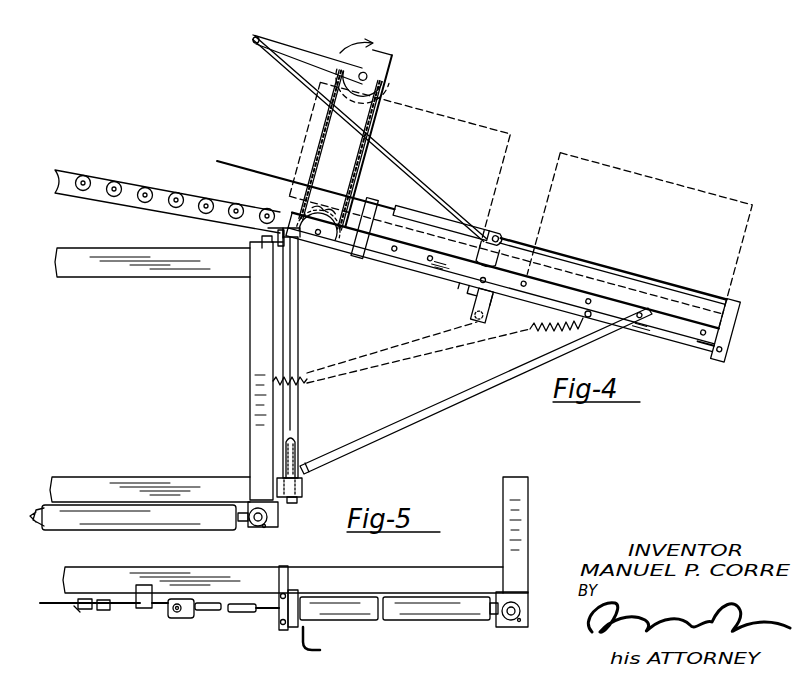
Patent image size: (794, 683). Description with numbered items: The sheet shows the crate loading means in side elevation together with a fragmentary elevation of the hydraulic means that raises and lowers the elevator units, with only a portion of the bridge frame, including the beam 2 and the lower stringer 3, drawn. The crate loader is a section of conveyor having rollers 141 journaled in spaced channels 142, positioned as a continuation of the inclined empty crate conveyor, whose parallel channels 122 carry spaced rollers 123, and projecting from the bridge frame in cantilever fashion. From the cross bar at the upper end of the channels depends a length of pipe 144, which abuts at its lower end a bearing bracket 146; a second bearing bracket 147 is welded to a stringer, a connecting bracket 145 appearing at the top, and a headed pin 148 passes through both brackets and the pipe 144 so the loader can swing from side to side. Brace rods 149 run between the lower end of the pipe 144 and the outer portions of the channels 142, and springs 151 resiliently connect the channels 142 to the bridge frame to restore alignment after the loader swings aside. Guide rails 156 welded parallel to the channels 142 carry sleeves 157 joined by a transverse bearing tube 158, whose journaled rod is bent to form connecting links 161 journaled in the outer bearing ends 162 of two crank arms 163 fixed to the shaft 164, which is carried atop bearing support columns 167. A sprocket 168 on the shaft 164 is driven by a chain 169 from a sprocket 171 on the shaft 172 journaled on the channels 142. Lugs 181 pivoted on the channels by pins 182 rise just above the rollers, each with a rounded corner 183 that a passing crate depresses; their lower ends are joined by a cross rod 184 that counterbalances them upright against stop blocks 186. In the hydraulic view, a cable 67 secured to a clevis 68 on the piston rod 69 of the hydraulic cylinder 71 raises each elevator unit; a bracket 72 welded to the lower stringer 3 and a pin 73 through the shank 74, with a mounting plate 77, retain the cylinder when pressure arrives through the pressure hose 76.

In FIG. 4, the frame beam 2 is at (80, 270).
In FIG. 4, the lower stringer 3 is at (70, 480).
In FIG. 5, the lower stringer 3 is at (319, 568).
In FIG. 5, the cable 67 is at (60, 606).
In FIG. 5, the clevis 68 is at (160, 610).
In FIG. 4, the piston rod 69 is at (40, 522).
In FIG. 5, the piston rod 69 is at (252, 614).
In FIG. 4, the hydraulic cylinder 71 is at (140, 520).
In FIG. 5, the hydraulic cylinder 71 is at (418, 617).
In FIG. 4, the bracket 72 is at (268, 511).
In FIG. 5, the bracket 72 is at (528, 603).
In FIG. 4, the pin 73 is at (257, 527).
In FIG. 5, the pin 73 is at (510, 622).
In FIG. 4, the shank 74 is at (264, 528).
In FIG. 5, the shank 74 is at (522, 620).
In FIG. 5, the pressure hose 76 is at (320, 644).
In FIG. 5, the mounting bracket 77 is at (281, 579).
In FIG. 4, the channels 122 is at (188, 212).
In FIG. 4, the rollers 123 is at (175, 193).
In FIG. 4, the rollers 141 is at (651, 316).
In FIG. 4, the channels 142 is at (445, 277).
In FIG. 4, the pipe 144 is at (298, 315).
In FIG. 4, the top bracket 145 is at (281, 243).
In FIG. 4, the bearing bracket 146 is at (303, 489).
In FIG. 4, the second bearing bracket 147 is at (255, 246).
In FIG. 4, the headed pin 148 is at (300, 447).
In FIG. 4, the brace rods 149 is at (470, 388).
In FIG. 4, the springs 151 is at (301, 377).
In FIG. 4, the guide rails 156 is at (575, 262).
In FIG. 4, the sleeves 157 is at (441, 229).
In FIG. 4, the bearing tube 158 is at (486, 254).
In FIG. 4, the connecting links 161 is at (428, 197).
In FIG. 4, the outer bearing ends 162 is at (254, 38).
In FIG. 4, the crank arms 163 is at (296, 54).
In FIG. 4, the shaft 164 is at (380, 73).
In FIG. 4, the bearing support columns 167 is at (366, 122).
In FIG. 4, the sprocket 168 is at (378, 60).
In FIG. 4, the chain 169 is at (384, 96).
In FIG. 4, the sprocket 171 is at (320, 222).
In FIG. 4, the shaft 172 is at (320, 248).
In FIG. 4, the lugs 181 is at (491, 303).
In FIG. 4, the pins 182 is at (487, 281).
In FIG. 4, the rounded corner 183 is at (440, 287).
In FIG. 4, the cross rod 184 is at (478, 318).
In FIG. 4, the stop blocks 186 is at (467, 297).